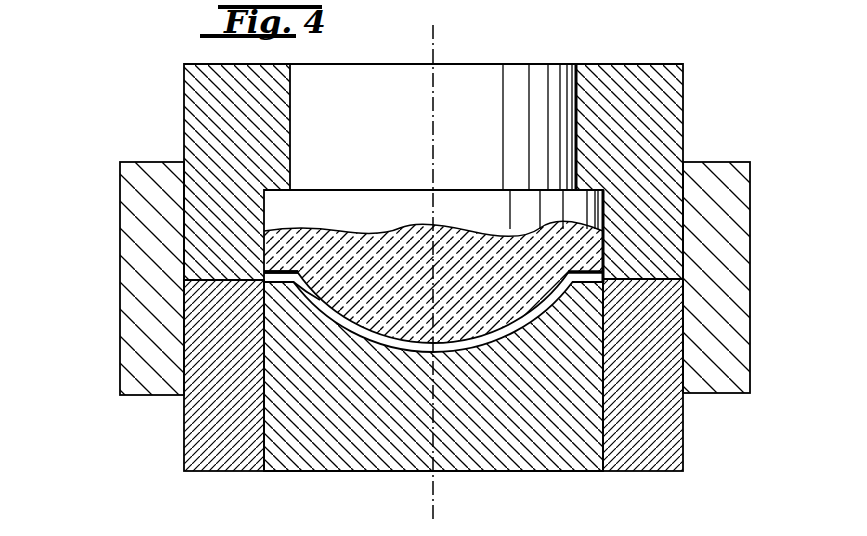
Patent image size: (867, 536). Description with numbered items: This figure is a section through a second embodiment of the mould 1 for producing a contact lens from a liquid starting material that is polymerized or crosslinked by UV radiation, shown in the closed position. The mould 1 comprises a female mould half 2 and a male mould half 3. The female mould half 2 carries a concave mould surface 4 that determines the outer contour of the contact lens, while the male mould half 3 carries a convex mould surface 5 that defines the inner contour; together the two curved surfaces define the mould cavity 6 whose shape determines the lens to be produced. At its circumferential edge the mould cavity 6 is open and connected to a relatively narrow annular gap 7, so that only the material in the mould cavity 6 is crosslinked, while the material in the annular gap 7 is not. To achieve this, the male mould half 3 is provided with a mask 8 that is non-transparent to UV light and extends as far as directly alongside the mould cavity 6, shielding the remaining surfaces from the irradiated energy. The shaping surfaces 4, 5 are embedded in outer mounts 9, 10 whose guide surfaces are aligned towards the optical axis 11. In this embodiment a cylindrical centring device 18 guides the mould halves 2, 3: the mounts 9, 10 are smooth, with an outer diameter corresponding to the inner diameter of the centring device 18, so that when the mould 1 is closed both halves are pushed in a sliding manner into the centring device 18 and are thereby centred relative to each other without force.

The mould 1 is at (128, 128).
The female mould half 2 is at (183, 433).
The male mould half 3 is at (183, 87).
The concave mould surface 4 is at (492, 337).
The convex mould surface 5 is at (458, 351).
The mould cavity 6 is at (403, 347).
The annular gap 7 is at (297, 283).
The mask 8 is at (297, 275).
The mount 9 is at (668, 445).
The mount 10 is at (665, 102).
The optical axis 11 is at (433, 502).
The centring device 18 is at (722, 268).